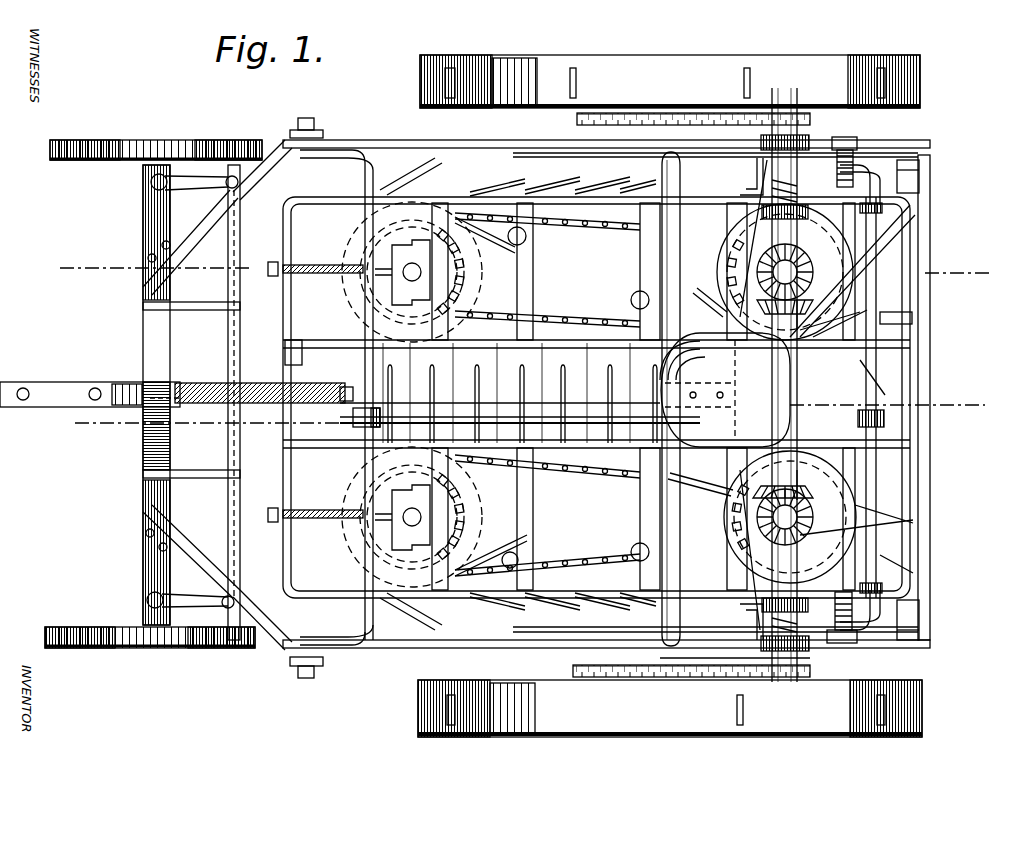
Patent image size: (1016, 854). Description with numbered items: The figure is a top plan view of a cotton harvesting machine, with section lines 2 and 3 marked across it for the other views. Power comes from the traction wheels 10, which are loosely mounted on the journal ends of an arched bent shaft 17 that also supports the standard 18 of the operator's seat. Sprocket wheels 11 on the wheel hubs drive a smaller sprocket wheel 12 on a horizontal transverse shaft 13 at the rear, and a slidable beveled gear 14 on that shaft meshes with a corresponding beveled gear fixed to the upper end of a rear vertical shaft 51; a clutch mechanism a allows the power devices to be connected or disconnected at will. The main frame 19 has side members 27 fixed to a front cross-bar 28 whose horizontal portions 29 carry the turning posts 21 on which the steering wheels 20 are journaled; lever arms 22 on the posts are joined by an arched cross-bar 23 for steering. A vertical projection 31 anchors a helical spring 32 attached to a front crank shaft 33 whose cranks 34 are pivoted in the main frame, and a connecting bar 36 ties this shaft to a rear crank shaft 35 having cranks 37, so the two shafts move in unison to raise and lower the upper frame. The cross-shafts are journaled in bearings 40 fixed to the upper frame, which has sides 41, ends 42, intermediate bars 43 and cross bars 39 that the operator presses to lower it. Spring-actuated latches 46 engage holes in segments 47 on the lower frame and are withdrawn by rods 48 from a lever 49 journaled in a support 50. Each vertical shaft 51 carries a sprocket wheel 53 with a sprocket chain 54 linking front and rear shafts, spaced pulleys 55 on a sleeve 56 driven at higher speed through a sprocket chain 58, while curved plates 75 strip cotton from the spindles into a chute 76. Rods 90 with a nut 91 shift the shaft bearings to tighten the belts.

The section line 2— 2 is at (526, 418).
The section line 3— 3 is at (522, 272).
The traction wheels 10 is at (670, 396).
The sprocket wheels 11 is at (644, 112).
The smaller sprocket wheel 12 is at (798, 110).
The horizontal transverse shaft 13 is at (800, 297).
The slidable beveled gear 14 is at (803, 309).
The bent shaft 17 is at (661, 265).
The standard of the operator's seat 18 is at (725, 390).
The main frame 19 is at (328, 140).
The steering wheels 20 is at (98, 160).
The turning posts 21 is at (155, 190).
The lever arms 22 is at (188, 170).
The arched cross-bar 23 is at (238, 540).
The side members 27 is at (410, 145).
The front cross-bar 28 is at (148, 444).
The horizontal portions of the front cross-bar 29 is at (150, 250).
The vertical projection 31 is at (150, 368).
The helical spring 32 is at (215, 382).
The crank shaft 33 is at (330, 345).
The cranks 34 is at (312, 150).
The rear crank shaft 35 is at (880, 510).
The connecting bar 36 is at (630, 490).
The cranks of rear crank shaft 37 is at (878, 170).
The cross bars of the upper frame 39 is at (528, 297).
The bearings 40 is at (300, 196).
The sides of upper frame 41 is at (578, 615).
The ends of upper frame 42 is at (283, 464).
The intermediate bars 43 is at (926, 430).
The spring-actuated latches 46 is at (852, 157).
The segments 47 is at (570, 205).
The rods 48 is at (880, 273).
The lever 49 is at (798, 345).
The support 50 is at (912, 318).
The vertical shafts 51 is at (408, 262).
The sprocket wheel 53 is at (470, 505).
The sprocket chain 54 is at (605, 348).
The pulleys 55 is at (840, 240).
The sleeve 56 is at (620, 318).
The sprocket chain 58 is at (530, 240).
The curved plates 75 is at (800, 262).
The chute 76 is at (920, 172).
The rods 90 is at (322, 265).
The nut 91 is at (272, 262).
The clutch mechanism a is at (742, 172).